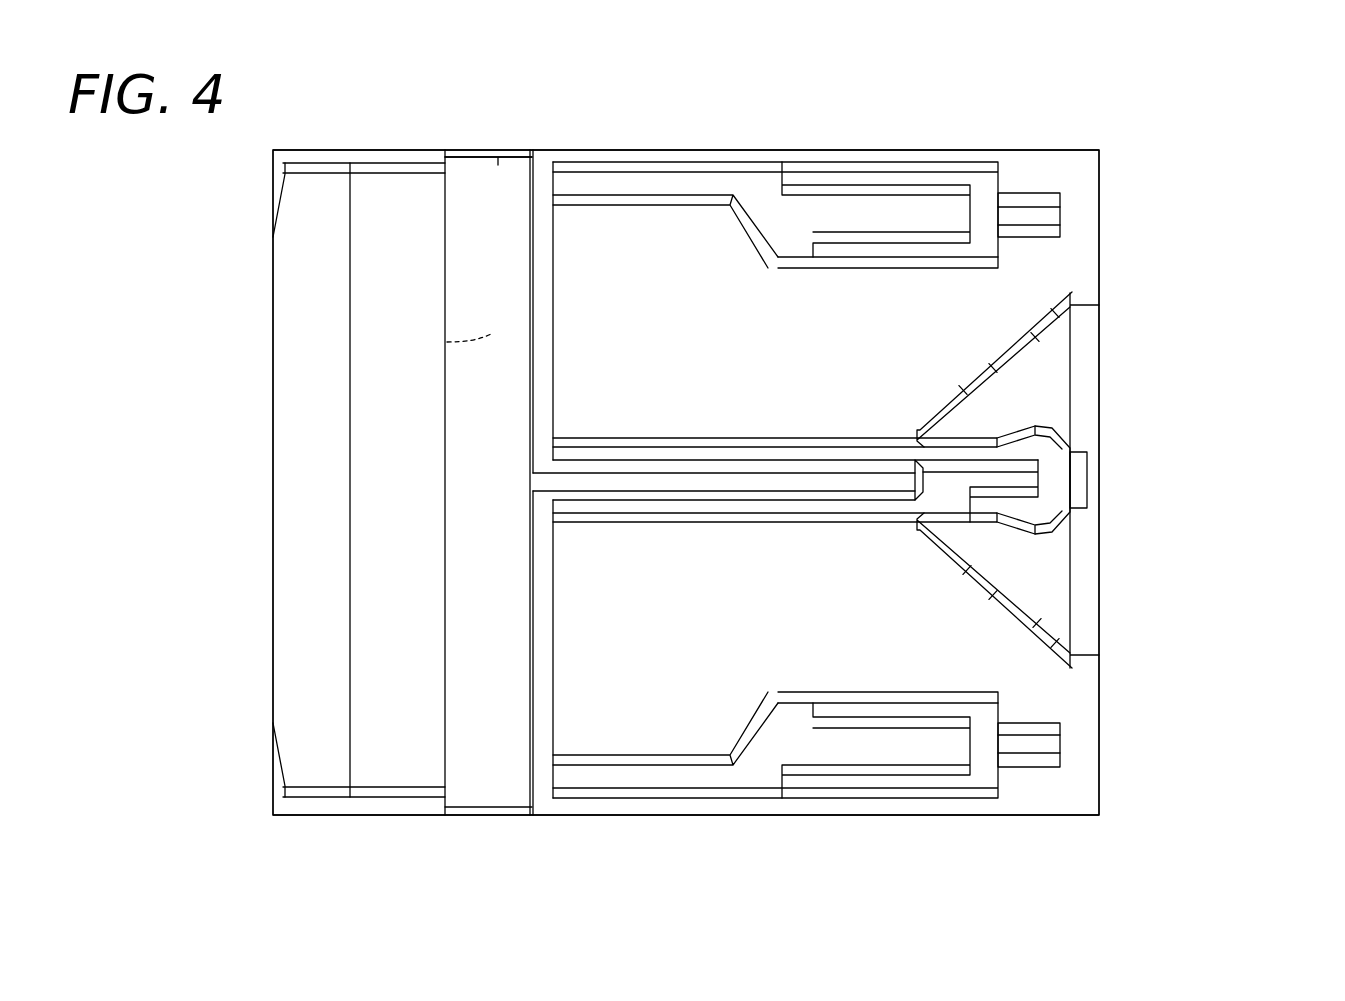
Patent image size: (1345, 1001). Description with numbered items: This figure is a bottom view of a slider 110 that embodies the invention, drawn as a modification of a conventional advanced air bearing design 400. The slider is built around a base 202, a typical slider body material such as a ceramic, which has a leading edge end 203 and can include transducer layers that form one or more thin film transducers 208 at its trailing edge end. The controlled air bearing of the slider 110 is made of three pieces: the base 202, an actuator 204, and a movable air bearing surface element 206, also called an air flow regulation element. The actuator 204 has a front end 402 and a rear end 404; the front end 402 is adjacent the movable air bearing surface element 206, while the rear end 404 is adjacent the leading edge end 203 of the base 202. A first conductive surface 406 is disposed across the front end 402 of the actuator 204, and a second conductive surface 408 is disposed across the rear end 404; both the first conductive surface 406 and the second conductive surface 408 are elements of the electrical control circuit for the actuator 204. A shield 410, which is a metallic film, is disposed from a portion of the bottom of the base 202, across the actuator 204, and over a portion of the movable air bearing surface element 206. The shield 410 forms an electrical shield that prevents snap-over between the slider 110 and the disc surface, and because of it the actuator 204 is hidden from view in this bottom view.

The slider 110 is at (1245, 128).
The base 202 is at (708, 150).
The leading edge end 203 is at (552, 770).
The actuator 204 is at (447, 342).
The movable air bearing surface element 206 is at (380, 592).
The thin film transducer 208 is at (1087, 483).
The conventional advanced air bearing design 400 is at (1008, 848).
The front end 402 is at (450, 150).
The rear end 404 is at (533, 150).
The first conductive surface 406 is at (443, 814).
The second conductive surface 408 is at (530, 814).
The shield 410 is at (498, 160).